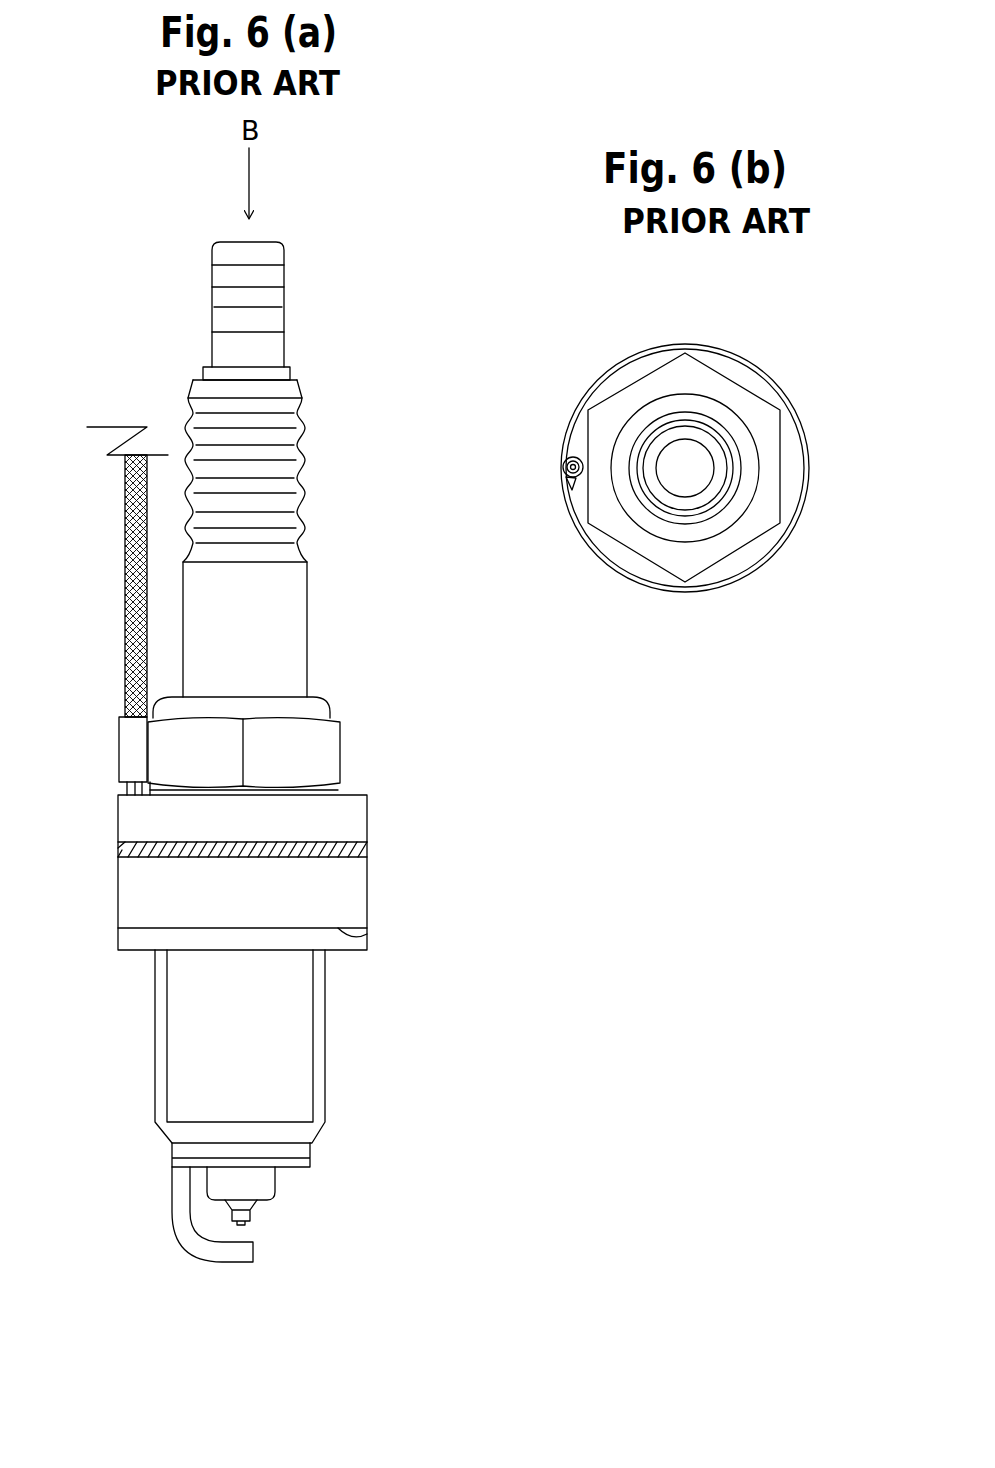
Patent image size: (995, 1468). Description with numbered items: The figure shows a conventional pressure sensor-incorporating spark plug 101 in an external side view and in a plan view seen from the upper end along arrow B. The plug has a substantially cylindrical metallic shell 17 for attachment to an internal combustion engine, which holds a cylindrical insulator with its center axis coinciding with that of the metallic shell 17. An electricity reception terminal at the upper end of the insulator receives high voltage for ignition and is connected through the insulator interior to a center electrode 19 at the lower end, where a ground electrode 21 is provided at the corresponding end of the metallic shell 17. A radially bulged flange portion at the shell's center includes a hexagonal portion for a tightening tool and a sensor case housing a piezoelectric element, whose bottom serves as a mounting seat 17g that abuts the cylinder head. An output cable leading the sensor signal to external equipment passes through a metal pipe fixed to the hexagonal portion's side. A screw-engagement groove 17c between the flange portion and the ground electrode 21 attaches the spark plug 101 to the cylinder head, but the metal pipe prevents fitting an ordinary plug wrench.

The pressure sensor-incorporating spark plug 101 is at (322, 231).
The metallic shell 17 is at (590, 813).
The screw-engagement groove 17c is at (320, 1058).
The mounting seat 17g is at (355, 940).
The center electrode 19 is at (250, 1222).
The ground electrode 21 is at (215, 1262).